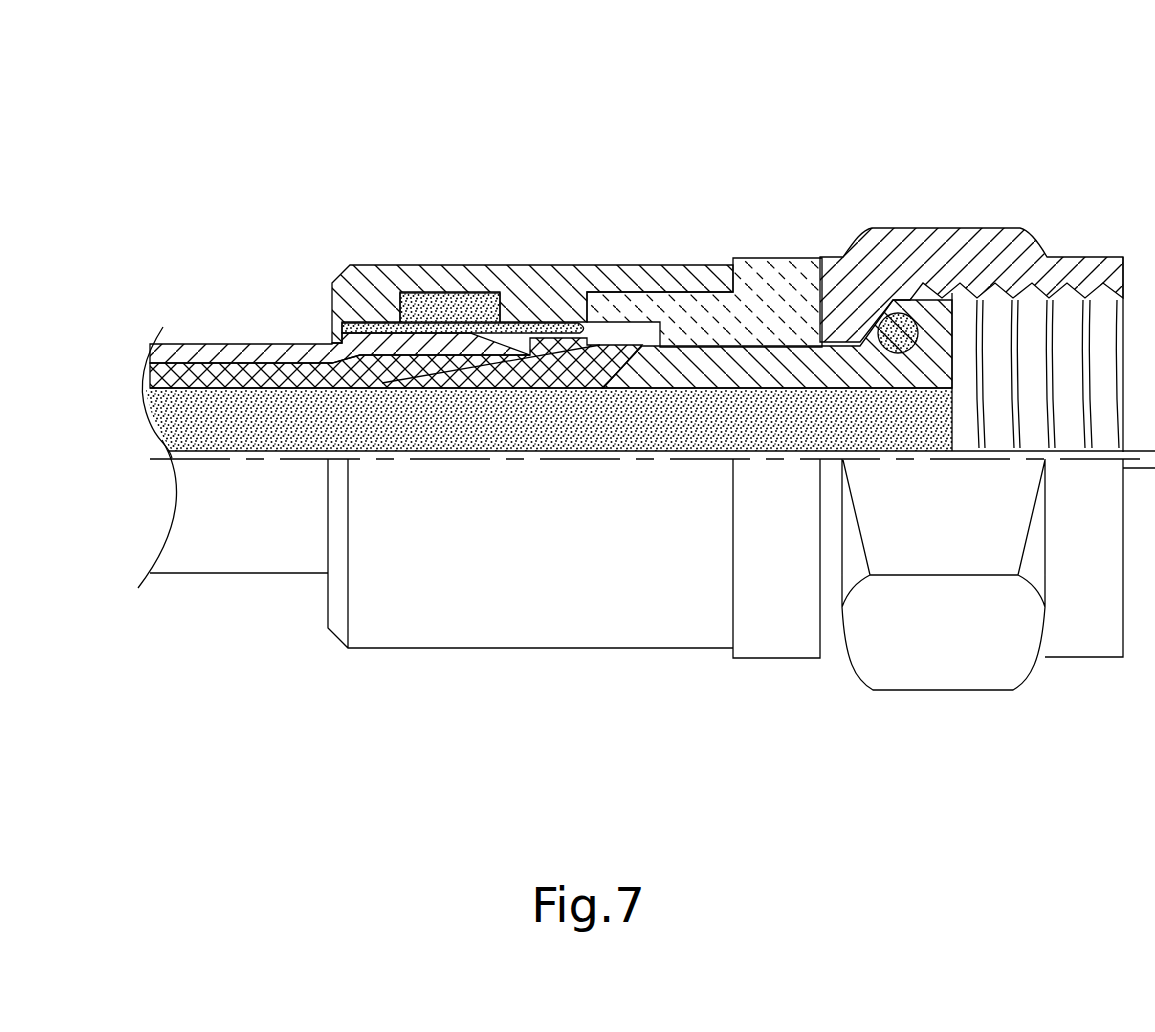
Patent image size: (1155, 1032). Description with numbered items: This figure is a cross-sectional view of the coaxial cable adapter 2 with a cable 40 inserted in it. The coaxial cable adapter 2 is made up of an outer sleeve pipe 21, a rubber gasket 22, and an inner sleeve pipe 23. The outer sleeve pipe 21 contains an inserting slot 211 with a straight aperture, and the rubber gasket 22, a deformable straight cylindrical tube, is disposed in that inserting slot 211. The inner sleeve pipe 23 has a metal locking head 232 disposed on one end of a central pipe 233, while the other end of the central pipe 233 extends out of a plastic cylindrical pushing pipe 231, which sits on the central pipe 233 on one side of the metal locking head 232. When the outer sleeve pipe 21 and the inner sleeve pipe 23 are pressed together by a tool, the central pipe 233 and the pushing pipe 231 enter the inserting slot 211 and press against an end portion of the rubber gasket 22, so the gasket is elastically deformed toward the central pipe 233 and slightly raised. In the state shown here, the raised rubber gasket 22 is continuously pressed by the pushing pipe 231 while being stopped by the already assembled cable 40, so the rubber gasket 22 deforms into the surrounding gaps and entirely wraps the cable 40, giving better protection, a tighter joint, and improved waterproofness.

The coaxial cable adapter 2 is at (970, 127).
The outer sleeve pipe 21 is at (522, 276).
The inserting slot 211 is at (564, 295).
The rubber gasket 22 is at (450, 306).
The inner sleeve pipe 23 is at (693, 648).
The plastic cylindrical pushing pipe 231 is at (642, 293).
The metal locking head 232 is at (962, 248).
The central pipe 233 is at (596, 372).
The cable 40 is at (240, 344).